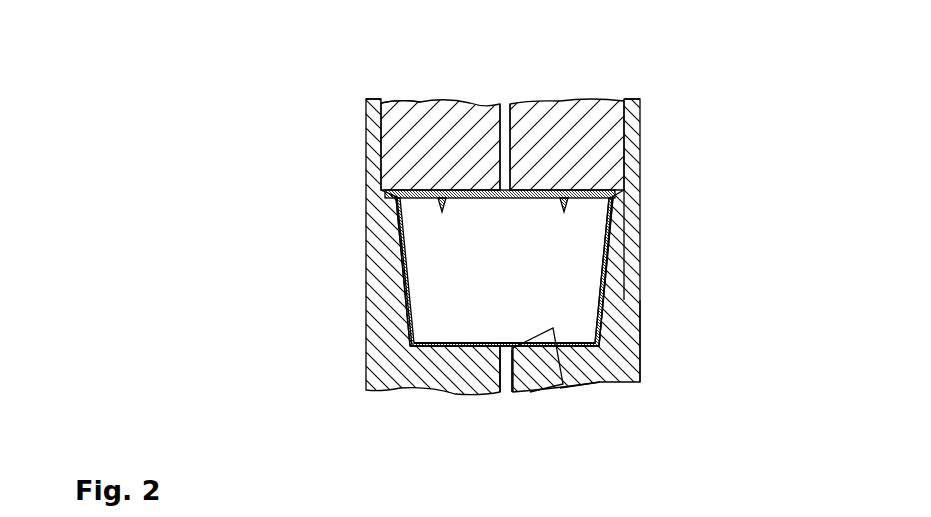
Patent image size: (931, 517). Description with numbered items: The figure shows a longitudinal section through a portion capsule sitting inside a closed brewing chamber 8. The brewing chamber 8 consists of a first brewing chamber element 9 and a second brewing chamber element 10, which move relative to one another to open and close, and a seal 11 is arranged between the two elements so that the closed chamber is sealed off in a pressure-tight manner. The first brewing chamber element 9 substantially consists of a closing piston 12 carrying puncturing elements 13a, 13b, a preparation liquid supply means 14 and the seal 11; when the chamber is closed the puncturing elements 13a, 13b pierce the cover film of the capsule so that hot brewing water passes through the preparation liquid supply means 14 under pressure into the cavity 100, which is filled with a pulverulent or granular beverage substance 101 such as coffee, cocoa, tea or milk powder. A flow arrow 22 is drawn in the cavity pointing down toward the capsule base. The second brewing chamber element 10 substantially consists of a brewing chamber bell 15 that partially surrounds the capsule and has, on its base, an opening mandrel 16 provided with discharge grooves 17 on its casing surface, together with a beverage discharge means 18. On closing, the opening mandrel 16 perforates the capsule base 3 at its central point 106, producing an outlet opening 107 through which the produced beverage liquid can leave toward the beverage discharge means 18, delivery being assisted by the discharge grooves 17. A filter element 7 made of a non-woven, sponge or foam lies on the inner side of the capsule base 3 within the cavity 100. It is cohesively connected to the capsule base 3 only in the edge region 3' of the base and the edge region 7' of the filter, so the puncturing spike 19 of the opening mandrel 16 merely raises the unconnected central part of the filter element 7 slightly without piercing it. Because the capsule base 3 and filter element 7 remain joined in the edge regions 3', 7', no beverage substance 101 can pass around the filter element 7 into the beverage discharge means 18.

The brewing chamber 8 is at (614, 76).
The first brewing chamber element 9 is at (401, 97).
The second brewing chamber element 10 is at (650, 331).
The seal 11 is at (617, 191).
The closing piston 12 is at (541, 110).
The puncturing element 13a is at (449, 203).
The puncturing element 13b is at (566, 203).
The preparation liquid supply means 14 is at (497, 103).
The brewing chamber bell 15 is at (604, 288).
The opening mandrel 16 is at (496, 352).
The discharge grooves 17 is at (540, 380).
The beverage discharge means 18 is at (513, 367).
The puncturing spike 19 is at (580, 378).
The brewing liquid flow direction 22 is at (492, 298).
The filter element 7 is at (504, 317).
The edge region of the filter element 7' is at (384, 272).
The capsule base 3 is at (499, 389).
The edge region of the capsule base 3' is at (418, 387).
The cavity 100 is at (588, 318).
The beverage substance 101 is at (672, 388).
The central point of the capsule base 106 is at (506, 342).
The outlet opening 107 is at (507, 343).